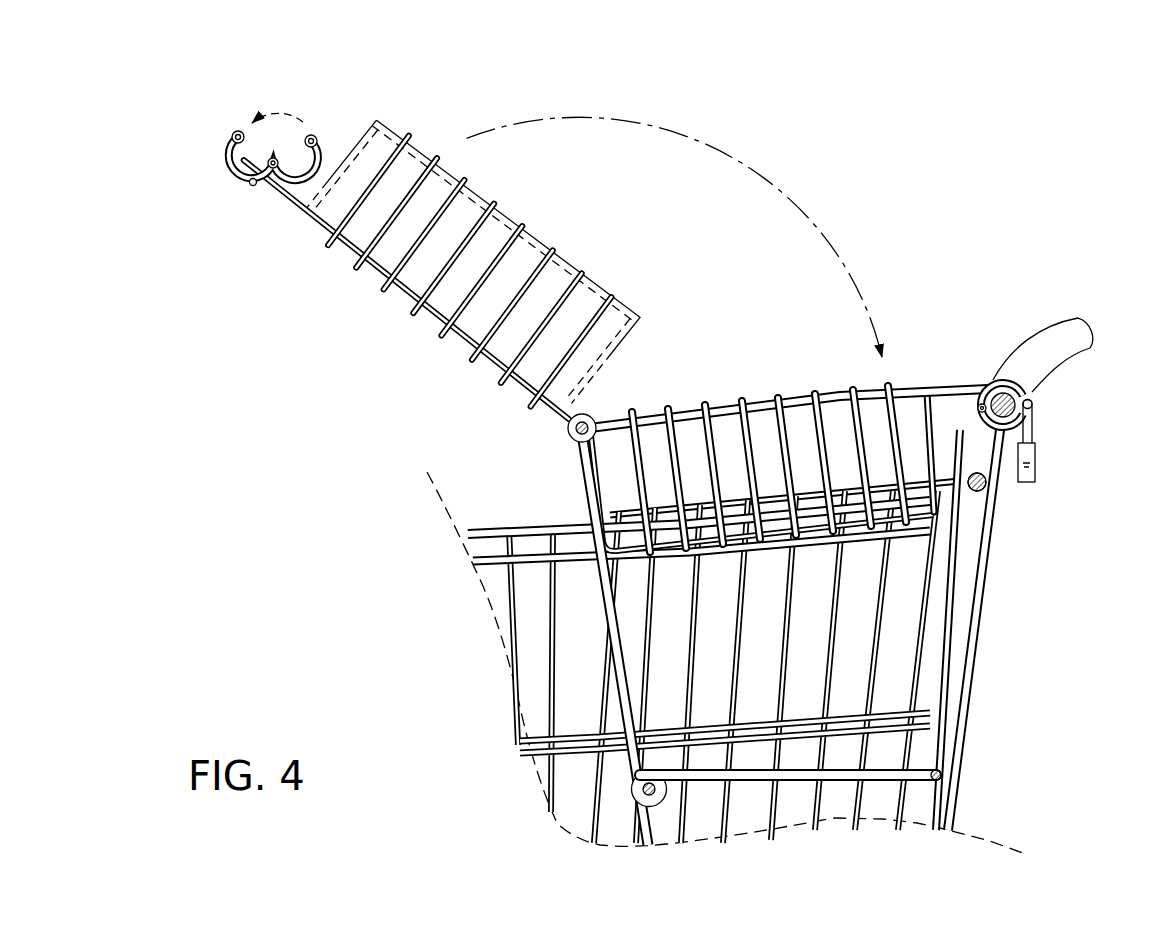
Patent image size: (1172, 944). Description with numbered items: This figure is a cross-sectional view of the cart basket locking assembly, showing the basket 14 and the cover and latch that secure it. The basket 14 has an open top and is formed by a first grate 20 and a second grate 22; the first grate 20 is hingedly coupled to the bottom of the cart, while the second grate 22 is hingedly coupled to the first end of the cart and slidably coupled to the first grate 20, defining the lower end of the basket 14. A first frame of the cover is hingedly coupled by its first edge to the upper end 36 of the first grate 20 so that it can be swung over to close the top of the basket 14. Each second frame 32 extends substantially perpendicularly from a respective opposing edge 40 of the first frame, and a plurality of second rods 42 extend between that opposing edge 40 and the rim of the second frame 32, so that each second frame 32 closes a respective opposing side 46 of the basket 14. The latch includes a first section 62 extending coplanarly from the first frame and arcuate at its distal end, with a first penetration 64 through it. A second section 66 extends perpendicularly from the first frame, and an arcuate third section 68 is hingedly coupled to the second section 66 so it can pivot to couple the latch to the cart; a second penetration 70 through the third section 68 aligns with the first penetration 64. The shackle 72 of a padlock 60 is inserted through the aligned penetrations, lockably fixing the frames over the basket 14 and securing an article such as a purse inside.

The basket 14 is at (756, 641).
The first grate 20 is at (603, 615).
The second grate 22 is at (888, 768).
The second frame 32 is at (932, 430).
The upper end 36 is at (566, 437).
The opposing edge 40 is at (689, 415).
The second rod 42 is at (749, 448).
The opposing side 46 is at (882, 647).
The padlock 60 is at (1038, 488).
The first section 62 is at (228, 158).
The first penetration 64 is at (231, 126).
The second section 66 is at (265, 170).
The third section 68 is at (302, 182).
The second penetration 70 is at (315, 126).
The shackle 72 is at (1038, 434).